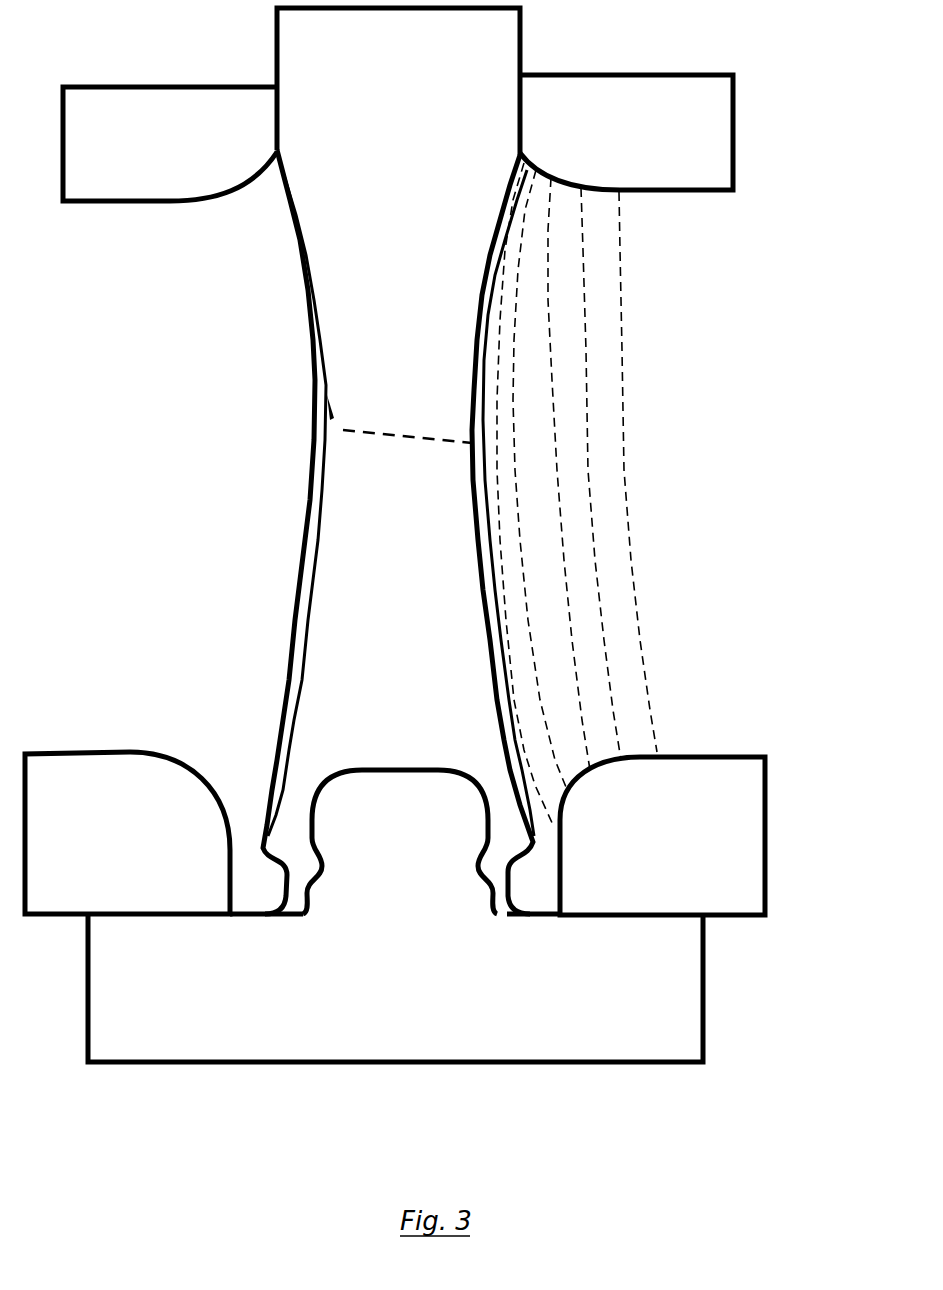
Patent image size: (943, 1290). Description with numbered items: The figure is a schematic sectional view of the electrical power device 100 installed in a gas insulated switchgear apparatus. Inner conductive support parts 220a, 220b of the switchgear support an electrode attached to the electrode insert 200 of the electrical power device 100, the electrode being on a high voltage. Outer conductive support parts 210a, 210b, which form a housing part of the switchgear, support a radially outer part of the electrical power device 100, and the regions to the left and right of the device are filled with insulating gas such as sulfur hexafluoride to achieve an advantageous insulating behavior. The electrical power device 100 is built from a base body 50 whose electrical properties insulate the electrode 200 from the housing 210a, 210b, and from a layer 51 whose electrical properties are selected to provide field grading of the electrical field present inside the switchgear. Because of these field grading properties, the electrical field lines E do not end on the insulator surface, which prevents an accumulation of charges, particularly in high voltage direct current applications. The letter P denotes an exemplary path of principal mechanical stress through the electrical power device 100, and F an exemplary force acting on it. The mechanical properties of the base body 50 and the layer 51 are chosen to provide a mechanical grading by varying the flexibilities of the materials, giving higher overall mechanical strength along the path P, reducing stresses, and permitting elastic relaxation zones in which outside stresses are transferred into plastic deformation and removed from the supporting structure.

The electrical power device 100 is at (348, 532).
The base body 50 is at (345, 478).
The layer 51 is at (311, 575).
The electrode insert 200 is at (340, 1030).
The outer conductive support part 210a is at (130, 87).
The outer conductive support part 210b is at (715, 78).
The inner conductive support part 220a is at (135, 752).
The inner conductive support part 220b is at (730, 918).
The path of principal mechanical stress P is at (343, 422).
The force F is at (418, 378).
The electrical field lines E is at (643, 329).